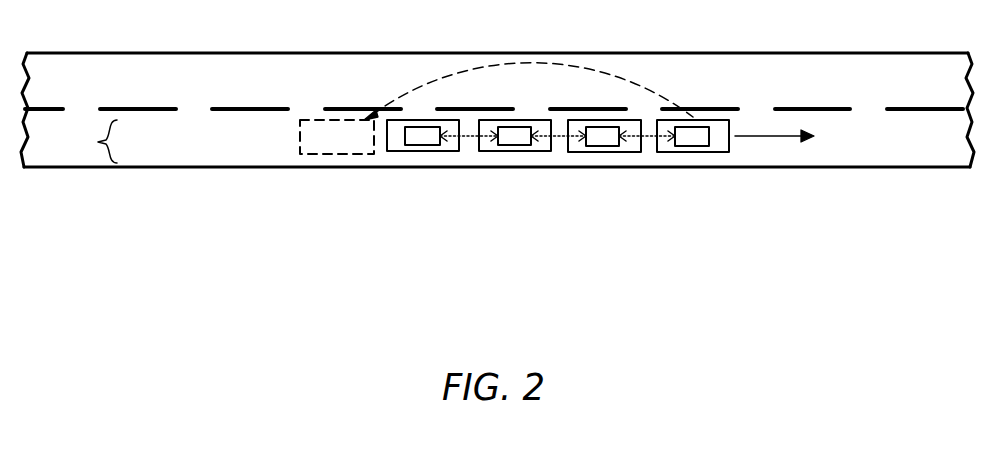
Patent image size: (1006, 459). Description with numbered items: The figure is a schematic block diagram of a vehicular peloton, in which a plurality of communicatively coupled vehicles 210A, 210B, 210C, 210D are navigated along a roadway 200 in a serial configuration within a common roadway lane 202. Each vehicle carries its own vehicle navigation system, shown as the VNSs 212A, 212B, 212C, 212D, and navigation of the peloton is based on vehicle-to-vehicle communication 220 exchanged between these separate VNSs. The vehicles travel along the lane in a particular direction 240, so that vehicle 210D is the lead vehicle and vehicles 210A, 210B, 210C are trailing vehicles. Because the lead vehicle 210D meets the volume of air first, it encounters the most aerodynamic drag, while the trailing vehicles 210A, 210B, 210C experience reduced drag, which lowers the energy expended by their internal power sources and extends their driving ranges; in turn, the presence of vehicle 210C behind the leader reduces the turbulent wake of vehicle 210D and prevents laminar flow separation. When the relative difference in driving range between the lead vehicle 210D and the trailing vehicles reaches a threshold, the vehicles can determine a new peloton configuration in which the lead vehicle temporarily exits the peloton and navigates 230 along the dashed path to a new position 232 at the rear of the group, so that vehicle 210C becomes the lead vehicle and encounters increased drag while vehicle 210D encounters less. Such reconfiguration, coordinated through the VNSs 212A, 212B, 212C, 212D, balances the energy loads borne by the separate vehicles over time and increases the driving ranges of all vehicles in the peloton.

The roadway 200 is at (251, 168).
The roadway lane 202 is at (88, 141).
The vehicle 210A is at (391, 152).
The vehicle 210B is at (503, 152).
The vehicle 210C is at (591, 153).
The lead vehicle 210D is at (680, 153).
The vehicle navigation system (VNS) 212A is at (428, 146).
The vehicle navigation system (VNS) 212B is at (527, 146).
The vehicle navigation system (VNS) 212C is at (615, 147).
The vehicle navigation system (VNS) 212D is at (704, 147).
The communication 220 is at (472, 136).
The navigation to new position 230 is at (620, 81).
The new position 232 is at (327, 155).
The direction 240 is at (768, 135).